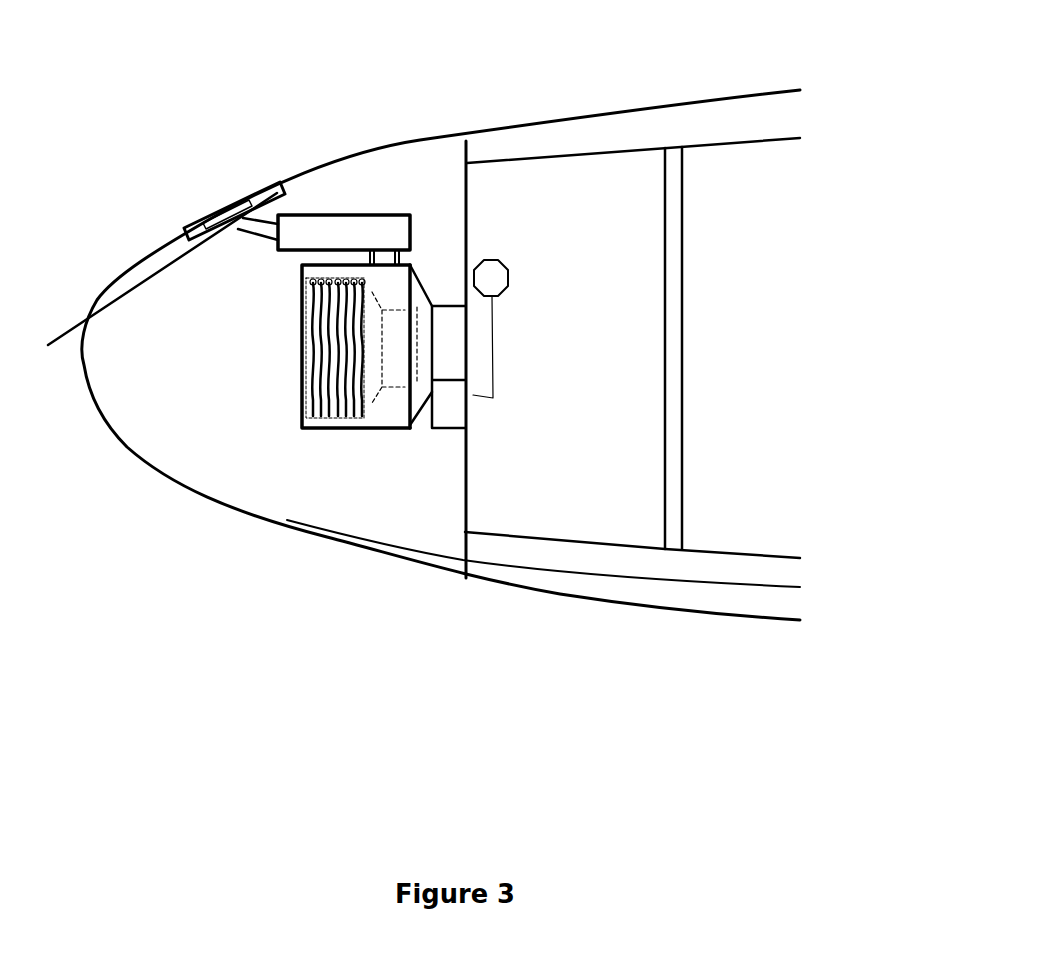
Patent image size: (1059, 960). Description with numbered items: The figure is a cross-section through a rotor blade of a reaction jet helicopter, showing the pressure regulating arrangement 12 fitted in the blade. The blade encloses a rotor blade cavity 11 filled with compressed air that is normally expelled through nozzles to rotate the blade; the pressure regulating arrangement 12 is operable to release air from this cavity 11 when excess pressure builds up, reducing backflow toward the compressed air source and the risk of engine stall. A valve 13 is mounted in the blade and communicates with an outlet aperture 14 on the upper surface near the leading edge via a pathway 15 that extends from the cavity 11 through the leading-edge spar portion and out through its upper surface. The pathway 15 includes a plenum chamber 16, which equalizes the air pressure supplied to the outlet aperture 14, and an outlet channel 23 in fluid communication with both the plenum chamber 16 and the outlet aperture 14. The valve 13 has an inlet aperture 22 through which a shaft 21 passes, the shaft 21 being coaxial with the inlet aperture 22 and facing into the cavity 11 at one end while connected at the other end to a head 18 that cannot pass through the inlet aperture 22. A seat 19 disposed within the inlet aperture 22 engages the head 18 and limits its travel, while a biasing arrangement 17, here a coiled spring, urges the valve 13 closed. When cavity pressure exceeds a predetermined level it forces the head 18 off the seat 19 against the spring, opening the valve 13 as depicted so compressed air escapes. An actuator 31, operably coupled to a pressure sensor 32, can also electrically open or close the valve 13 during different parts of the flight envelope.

The rotor blade cavity 11 is at (468, 482).
The pressure regulating arrangement 12 is at (255, 157).
The valve 13 is at (397, 430).
The outlet aperture 14 is at (217, 208).
The pathway 15 is at (267, 253).
The plenum chamber 16 is at (316, 212).
The biasing arrangement 17 is at (303, 430).
The head 18 is at (366, 392).
The seat 19 is at (431, 392).
The shaft 21 is at (392, 320).
The inlet aperture 22 is at (453, 305).
The outlet channel 23 is at (148, 281).
The actuator 31 is at (467, 428).
The pressure sensor 32 is at (487, 258).